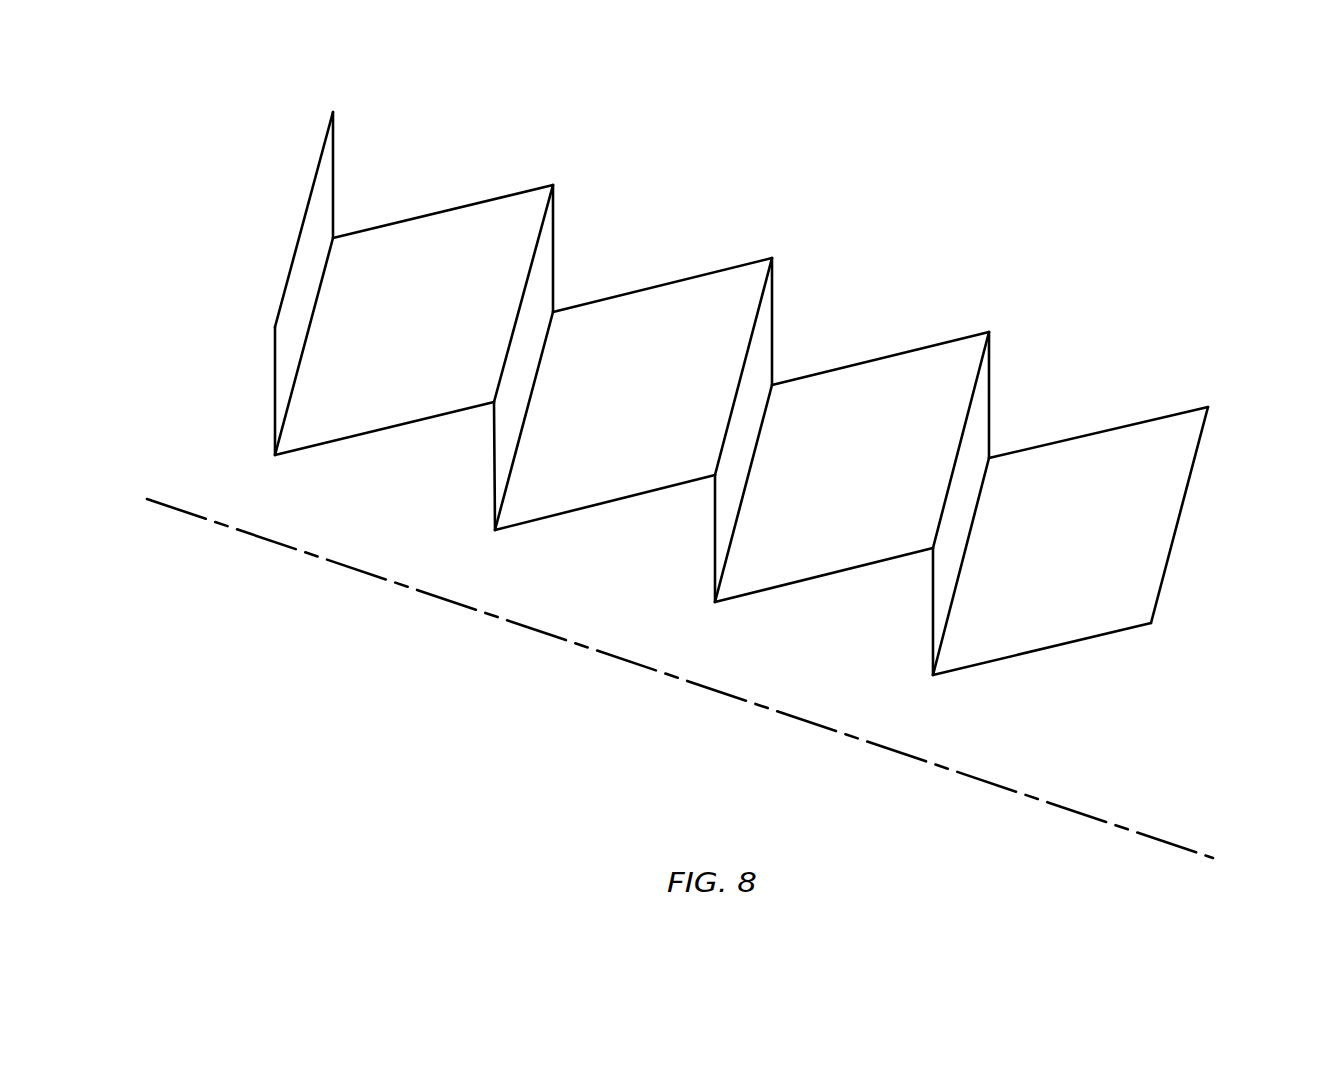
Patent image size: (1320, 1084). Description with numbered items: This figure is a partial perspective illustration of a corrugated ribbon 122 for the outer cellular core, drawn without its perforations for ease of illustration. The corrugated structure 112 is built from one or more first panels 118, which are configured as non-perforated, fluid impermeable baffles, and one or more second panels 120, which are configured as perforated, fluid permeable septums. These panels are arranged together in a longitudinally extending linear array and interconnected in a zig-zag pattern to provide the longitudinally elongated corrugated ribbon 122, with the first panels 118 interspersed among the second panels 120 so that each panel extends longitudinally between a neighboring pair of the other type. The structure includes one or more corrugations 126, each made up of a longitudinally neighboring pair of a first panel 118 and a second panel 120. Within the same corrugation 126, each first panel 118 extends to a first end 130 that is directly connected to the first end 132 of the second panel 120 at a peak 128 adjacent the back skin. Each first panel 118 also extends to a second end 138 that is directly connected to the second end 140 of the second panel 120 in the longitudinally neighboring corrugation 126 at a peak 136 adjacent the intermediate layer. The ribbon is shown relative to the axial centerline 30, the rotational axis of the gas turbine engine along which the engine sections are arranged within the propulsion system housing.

The axial centerline 30 is at (1190, 850).
The corrugated structure 112 is at (765, 397).
The corrugated ribbon 122 is at (1158, 213).
The first panel 118 is at (503, 195).
The second panel 120 is at (333, 167).
The corrugation 126 is at (457, 463).
The peak 128 is at (553, 184).
The first end 130 is at (503, 368).
The first end 132 is at (516, 322).
The peak 136 is at (494, 532).
The second end 138 is at (505, 487).
The second end 140 is at (507, 491).